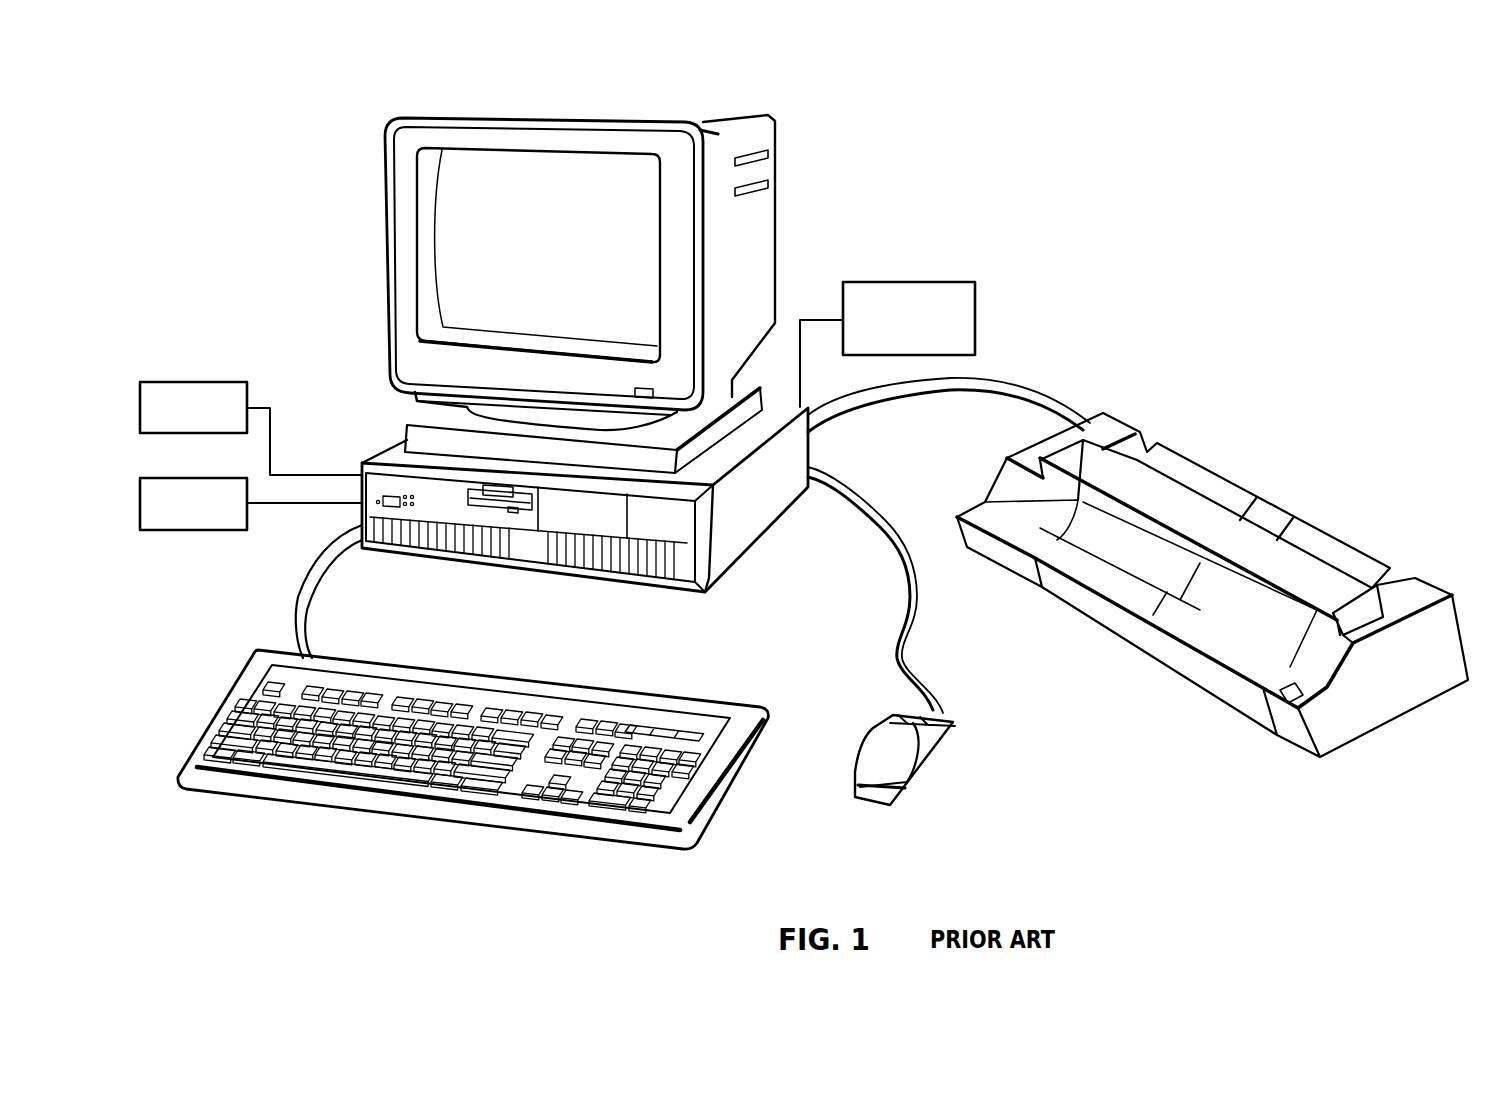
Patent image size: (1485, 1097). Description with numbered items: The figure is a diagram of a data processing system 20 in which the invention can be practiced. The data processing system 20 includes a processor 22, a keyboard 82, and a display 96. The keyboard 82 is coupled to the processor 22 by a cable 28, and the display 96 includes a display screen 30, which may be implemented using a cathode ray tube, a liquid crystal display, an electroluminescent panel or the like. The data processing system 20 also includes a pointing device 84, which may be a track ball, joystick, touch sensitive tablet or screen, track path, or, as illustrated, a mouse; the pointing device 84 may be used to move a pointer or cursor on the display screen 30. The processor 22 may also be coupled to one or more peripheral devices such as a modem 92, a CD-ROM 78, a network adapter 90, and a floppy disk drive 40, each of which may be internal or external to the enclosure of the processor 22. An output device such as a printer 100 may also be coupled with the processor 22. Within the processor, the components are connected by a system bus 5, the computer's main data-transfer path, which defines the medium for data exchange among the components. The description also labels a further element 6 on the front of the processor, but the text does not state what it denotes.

The data processing system 20 is at (1027, 215).
The processor 22 is at (716, 620).
The display 96 is at (374, 250).
The display screen 30 is at (504, 286).
The floppy disk drive 40 is at (500, 510).
The hard disk drive 6 is at (620, 557).
The system bus 5 is at (636, 537).
The cable 28 is at (302, 582).
The keyboard 82 is at (412, 832).
The pointing device 84 is at (947, 755).
The printer 100 is at (1133, 405).
The network adapter 90 is at (902, 282).
The modem 92 is at (197, 382).
The CD-ROM 78 is at (205, 532).